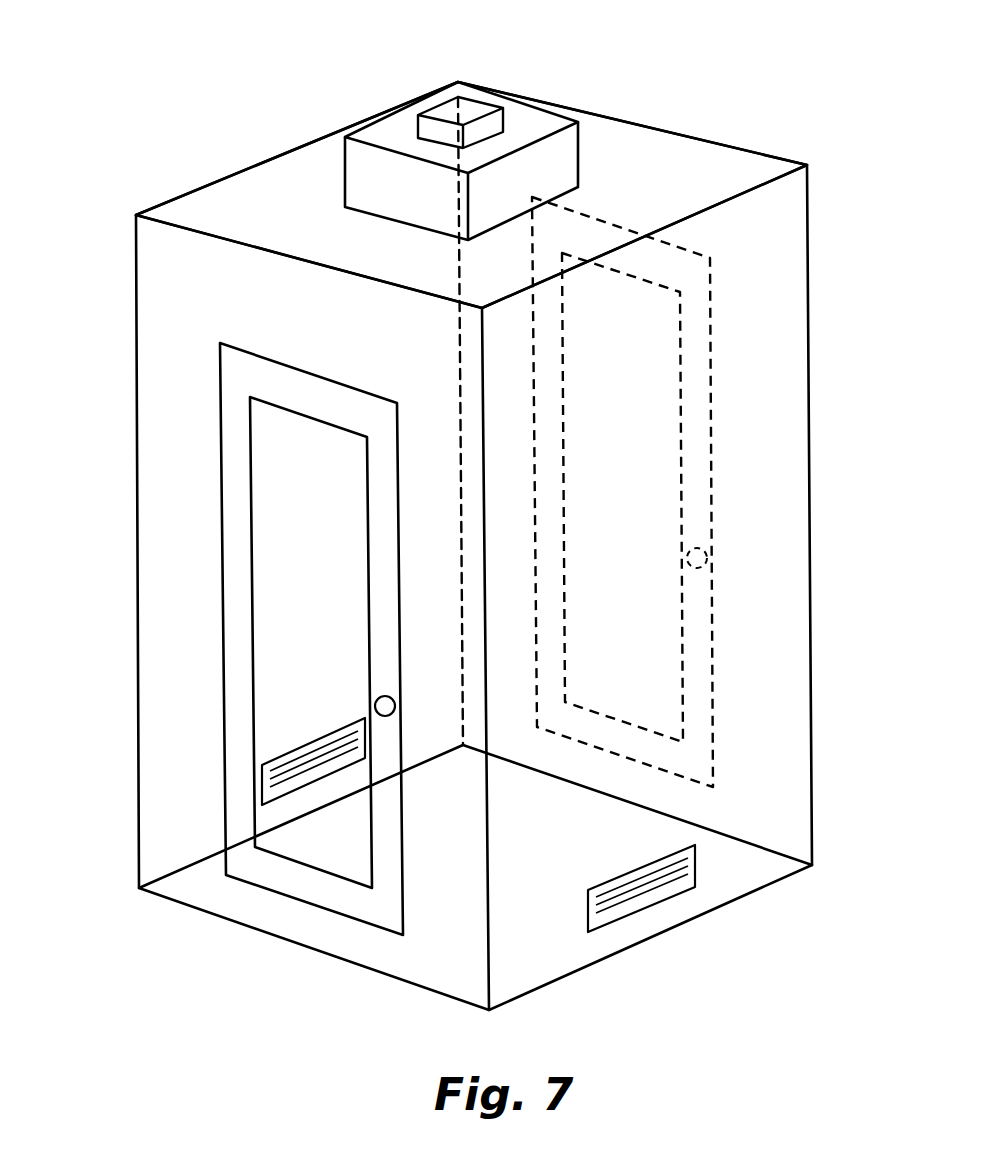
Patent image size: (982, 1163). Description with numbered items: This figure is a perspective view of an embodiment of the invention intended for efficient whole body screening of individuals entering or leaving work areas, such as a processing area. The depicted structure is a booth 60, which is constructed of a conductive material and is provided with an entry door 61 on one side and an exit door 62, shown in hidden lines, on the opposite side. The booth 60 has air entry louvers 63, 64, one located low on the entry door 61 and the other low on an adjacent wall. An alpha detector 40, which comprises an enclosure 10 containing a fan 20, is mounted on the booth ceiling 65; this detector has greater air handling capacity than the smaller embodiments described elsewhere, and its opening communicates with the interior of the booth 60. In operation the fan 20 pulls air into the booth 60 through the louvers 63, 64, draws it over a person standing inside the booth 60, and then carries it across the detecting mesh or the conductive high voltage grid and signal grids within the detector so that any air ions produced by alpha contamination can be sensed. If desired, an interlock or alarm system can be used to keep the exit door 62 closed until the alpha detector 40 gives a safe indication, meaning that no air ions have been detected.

The enclosure 10 is at (573, 152).
The fan 20 is at (467, 102).
The alpha detector 40 is at (659, 203).
The booth 60 is at (133, 338).
The entry door 61 is at (232, 610).
The exit door 62 is at (700, 442).
The air entry louver 63 is at (645, 897).
The air entry louver 64 is at (275, 782).
The booth ceiling 65 is at (275, 188).